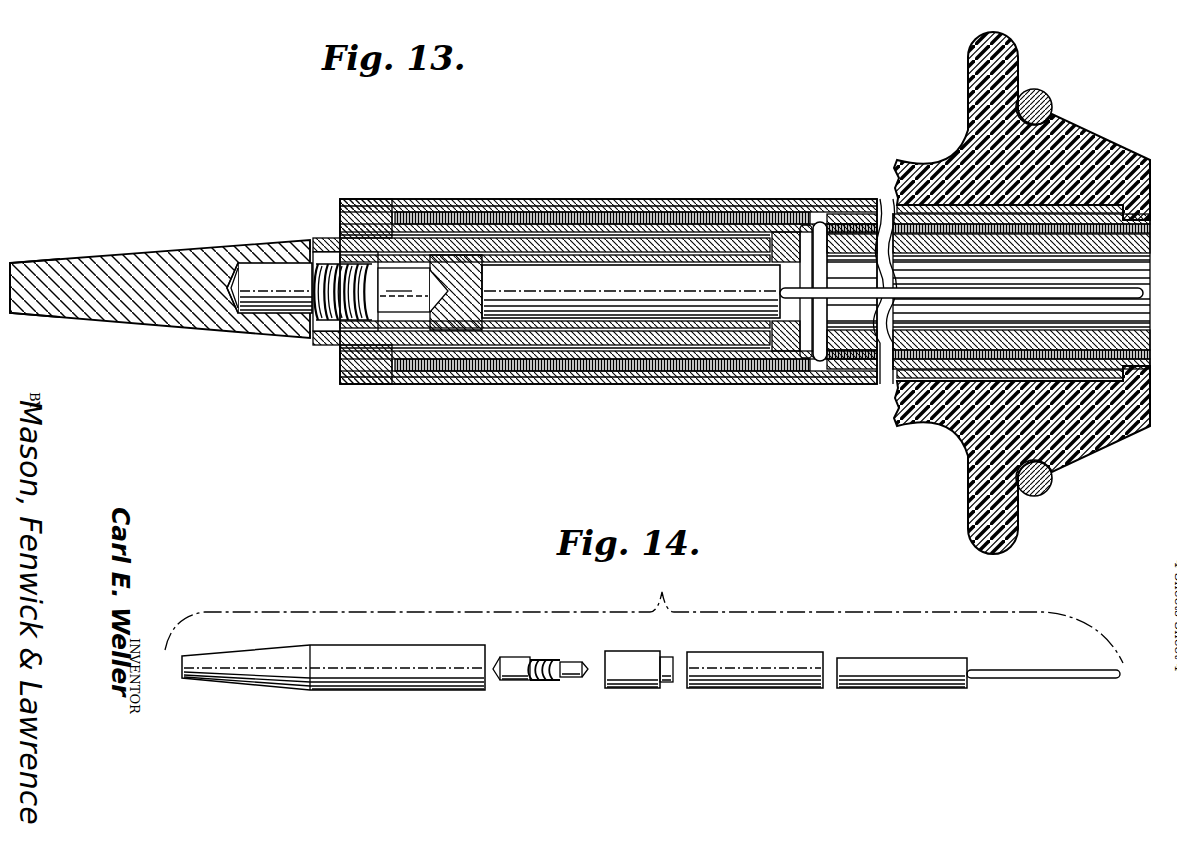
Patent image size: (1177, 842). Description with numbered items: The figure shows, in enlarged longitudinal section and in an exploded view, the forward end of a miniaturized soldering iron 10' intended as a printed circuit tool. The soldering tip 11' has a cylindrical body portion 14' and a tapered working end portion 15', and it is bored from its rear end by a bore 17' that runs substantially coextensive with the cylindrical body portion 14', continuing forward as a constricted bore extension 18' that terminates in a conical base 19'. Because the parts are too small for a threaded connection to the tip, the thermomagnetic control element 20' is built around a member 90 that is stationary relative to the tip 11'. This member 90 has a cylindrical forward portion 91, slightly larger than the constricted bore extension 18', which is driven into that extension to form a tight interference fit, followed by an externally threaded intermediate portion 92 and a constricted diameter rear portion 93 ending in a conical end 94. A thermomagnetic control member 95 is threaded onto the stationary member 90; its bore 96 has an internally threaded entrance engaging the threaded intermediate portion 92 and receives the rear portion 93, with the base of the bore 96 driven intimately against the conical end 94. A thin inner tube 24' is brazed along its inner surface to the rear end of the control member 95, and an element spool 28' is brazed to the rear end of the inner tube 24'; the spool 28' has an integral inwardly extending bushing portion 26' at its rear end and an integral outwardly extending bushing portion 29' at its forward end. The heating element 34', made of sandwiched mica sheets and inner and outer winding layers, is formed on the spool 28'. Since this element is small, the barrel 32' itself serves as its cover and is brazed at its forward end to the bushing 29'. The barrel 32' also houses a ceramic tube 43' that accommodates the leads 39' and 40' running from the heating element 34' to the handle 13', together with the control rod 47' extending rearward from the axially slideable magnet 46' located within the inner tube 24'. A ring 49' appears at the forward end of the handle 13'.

In FIG. 13, the soldering tool assembly 10' is at (618, 264).
In FIG. 13, the soldering tip 11' is at (160, 275).
In FIG. 14, the soldering tip 11' is at (333, 654).
In FIG. 13, the handle 13' is at (1021, 293).
In FIG. 13, the cylindrical body portion 14' is at (608, 267).
In FIG. 13, the tapered working end portion 15' is at (52, 269).
In FIG. 13, the bore 17' is at (321, 269).
In FIG. 13, the constricted bore extension 18' is at (284, 276).
In FIG. 13, the conical base 19' is at (232, 262).
In FIG. 14, the thermomagnetic control element 20' is at (583, 654).
In FIG. 13, the inner tube 24' is at (631, 293).
In FIG. 14, the inner tube 24' is at (755, 655).
In FIG. 13, the inwardly extending bushing portion 26' is at (759, 325).
In FIG. 13, the element spool 28' is at (541, 260).
In FIG. 13, the outwardly extending bushing portion 29' is at (368, 278).
In FIG. 13, the barrel 32' is at (608, 297).
In FIG. 13, the heating element 34' is at (602, 313).
In FIG. 13, the lead 39' is at (845, 273).
In FIG. 13, the lead 40' is at (796, 291).
In FIG. 13, the ceramic tube 43' is at (988, 291).
In FIG. 13, the axially slideable magnet 46' is at (559, 291).
In FIG. 14, the axially slideable magnet 46' is at (902, 655).
In FIG. 13, the control rod 47' is at (961, 306).
In FIG. 14, the control rod 47' is at (1043, 657).
In FIG. 13, the ring seal 49' is at (1042, 274).
In FIG. 13, the stationary member 90 is at (267, 300).
In FIG. 13, the cylindrical forward portion 91 is at (247, 307).
In FIG. 13, the externally threaded intermediate portion 92 is at (332, 312).
In FIG. 13, the constricted diameter rear portion 93 is at (404, 290).
In FIG. 13, the conical end 94 is at (449, 292).
In FIG. 13, the thermomagnetic control member 95 is at (470, 306).
In FIG. 13, the bore 96 is at (398, 250).